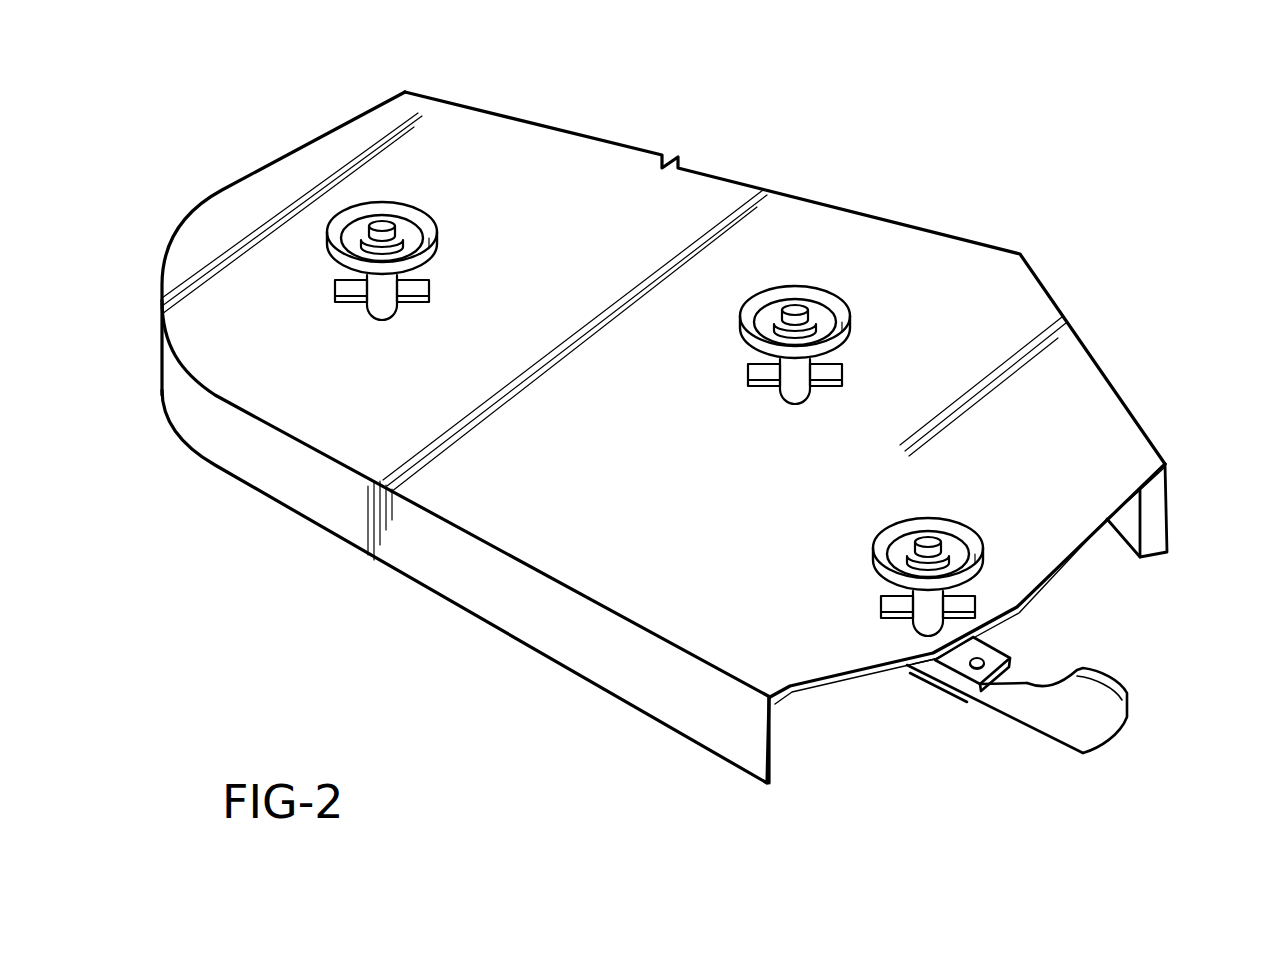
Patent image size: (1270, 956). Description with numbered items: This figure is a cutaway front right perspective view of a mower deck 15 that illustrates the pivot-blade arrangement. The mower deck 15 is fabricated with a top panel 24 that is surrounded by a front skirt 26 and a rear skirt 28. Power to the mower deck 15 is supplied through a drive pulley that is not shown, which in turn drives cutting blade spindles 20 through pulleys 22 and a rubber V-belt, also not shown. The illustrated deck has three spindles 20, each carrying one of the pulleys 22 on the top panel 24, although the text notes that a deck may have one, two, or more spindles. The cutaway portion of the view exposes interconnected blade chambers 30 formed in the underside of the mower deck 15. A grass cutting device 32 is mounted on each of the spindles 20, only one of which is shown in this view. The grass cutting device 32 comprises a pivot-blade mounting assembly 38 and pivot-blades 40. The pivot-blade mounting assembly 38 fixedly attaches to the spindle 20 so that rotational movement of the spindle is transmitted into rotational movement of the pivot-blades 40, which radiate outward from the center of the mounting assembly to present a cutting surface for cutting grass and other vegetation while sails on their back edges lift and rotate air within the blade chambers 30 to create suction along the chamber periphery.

The mower deck 15 is at (303, 400).
The cutting blade spindle 20 is at (383, 226).
The pulley 22 is at (420, 210).
The top panel 24 is at (868, 258).
The front skirt 26 is at (1170, 493).
The rear skirt 28 is at (773, 733).
The blade chamber 30 is at (1103, 557).
The grass cutting device 32 is at (910, 682).
The pivot-blade mounting assembly 38 is at (943, 688).
The pivot-blade 40 is at (1108, 738).